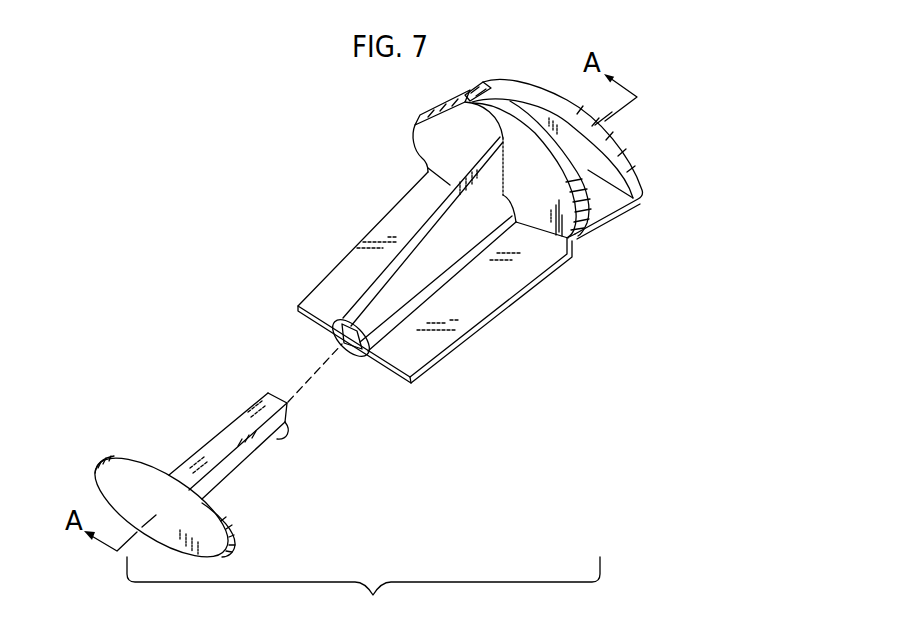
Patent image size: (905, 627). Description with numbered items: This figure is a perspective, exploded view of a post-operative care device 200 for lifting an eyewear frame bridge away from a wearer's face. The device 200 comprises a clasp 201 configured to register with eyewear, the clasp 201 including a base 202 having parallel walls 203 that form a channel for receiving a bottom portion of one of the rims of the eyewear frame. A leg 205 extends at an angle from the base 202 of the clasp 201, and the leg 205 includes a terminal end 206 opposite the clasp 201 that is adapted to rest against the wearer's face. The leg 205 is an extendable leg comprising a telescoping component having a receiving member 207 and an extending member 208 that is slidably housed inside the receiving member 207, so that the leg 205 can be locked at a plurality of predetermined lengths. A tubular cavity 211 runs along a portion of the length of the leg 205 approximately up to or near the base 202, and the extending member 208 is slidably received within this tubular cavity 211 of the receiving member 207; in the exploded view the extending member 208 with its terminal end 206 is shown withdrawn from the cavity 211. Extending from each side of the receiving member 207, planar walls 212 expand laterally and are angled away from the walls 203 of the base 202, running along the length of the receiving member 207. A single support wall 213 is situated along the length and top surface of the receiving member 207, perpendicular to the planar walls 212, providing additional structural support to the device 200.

The post-operative care device 200 is at (124, 203).
The clasp 201 is at (542, 73).
The base 202 is at (616, 197).
The parallel walls 203 is at (428, 158).
The leg 205 is at (363, 588).
The terminal end 206 is at (126, 447).
The receiving member 207 is at (455, 253).
The extending member 208 is at (232, 432).
The tubular cavity 211 is at (326, 357).
The planar walls 212 is at (333, 282).
The support wall 213 is at (430, 217).